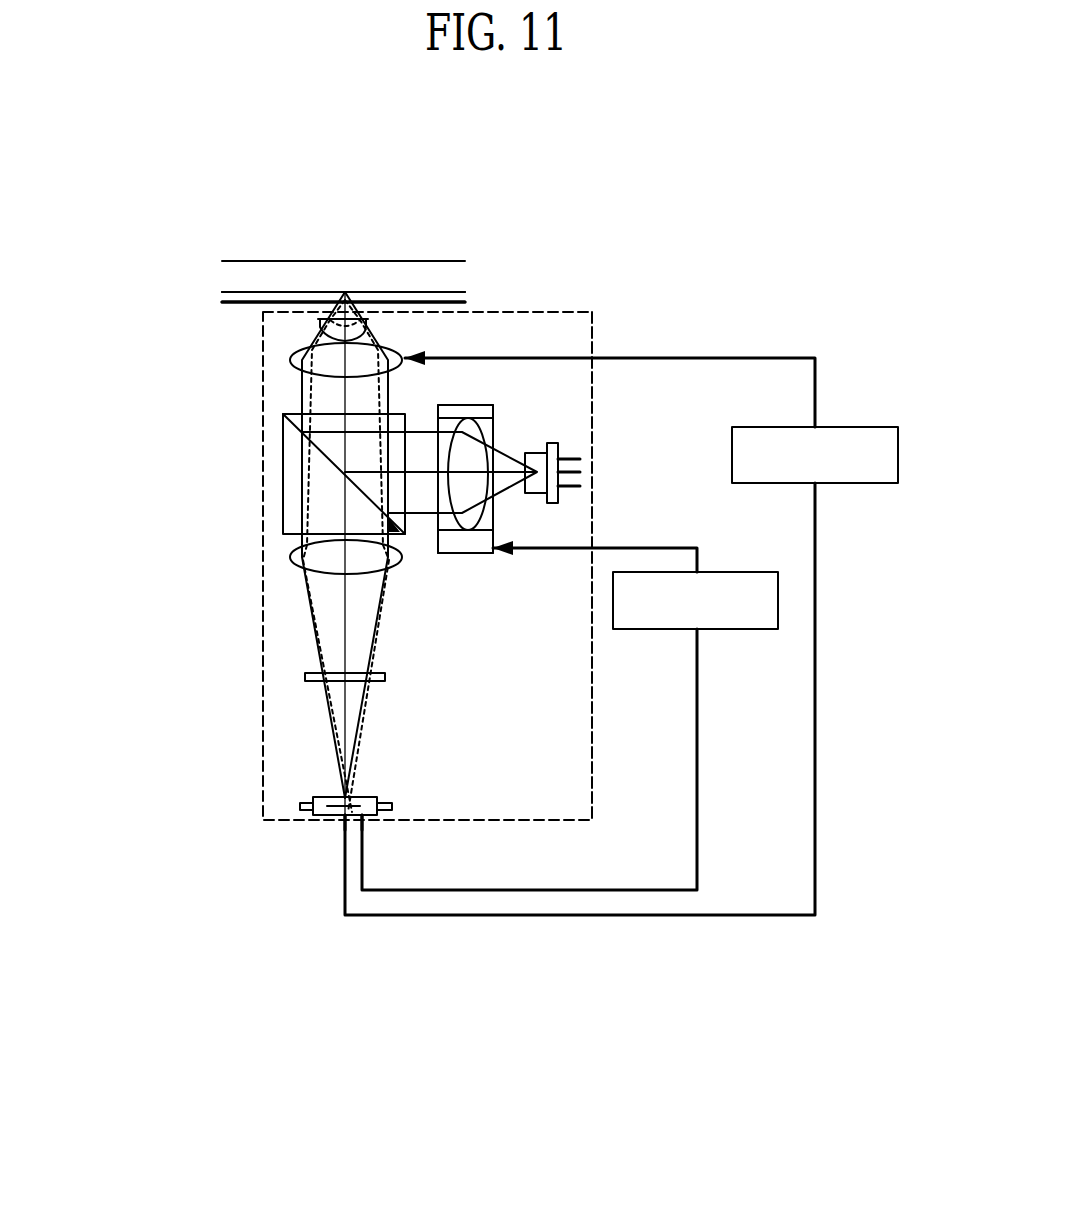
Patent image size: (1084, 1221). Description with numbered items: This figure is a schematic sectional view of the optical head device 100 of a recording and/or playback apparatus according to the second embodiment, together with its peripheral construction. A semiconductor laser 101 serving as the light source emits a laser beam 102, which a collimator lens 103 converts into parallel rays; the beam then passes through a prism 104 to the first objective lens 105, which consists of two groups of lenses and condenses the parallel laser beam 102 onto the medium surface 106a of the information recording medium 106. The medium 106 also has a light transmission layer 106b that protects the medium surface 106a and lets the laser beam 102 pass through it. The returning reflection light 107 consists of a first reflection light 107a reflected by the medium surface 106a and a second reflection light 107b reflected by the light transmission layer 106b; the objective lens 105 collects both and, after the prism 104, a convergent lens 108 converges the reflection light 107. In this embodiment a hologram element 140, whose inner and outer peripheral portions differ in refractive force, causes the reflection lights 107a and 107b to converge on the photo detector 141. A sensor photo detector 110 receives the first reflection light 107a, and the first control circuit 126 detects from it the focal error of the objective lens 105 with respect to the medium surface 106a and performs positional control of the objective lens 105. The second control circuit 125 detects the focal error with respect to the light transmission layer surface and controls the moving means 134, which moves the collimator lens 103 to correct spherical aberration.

The optical head device 100 is at (592, 425).
The semiconductor laser 101 is at (552, 503).
The laser beam 102 is at (592, 340).
The collimator lens 103 is at (505, 503).
The prism 104 is at (292, 496).
The first objective lens 105 is at (295, 336).
The information recording medium 106 is at (467, 280).
The medium surface 106a is at (262, 291).
The light transmission layer 106b is at (232, 299).
The reflection light 107 is at (332, 396).
The first reflection light 107a is at (383, 334).
The second reflection light 107b is at (405, 382).
The convergent lens 108 is at (298, 557).
The sensor photo detector 110 is at (327, 818).
The second control circuit 125 is at (725, 630).
The first control circuit 126 is at (828, 427).
The moving means 134 is at (500, 495).
The hologram element 140 is at (307, 675).
The photo detector 141 is at (310, 795).